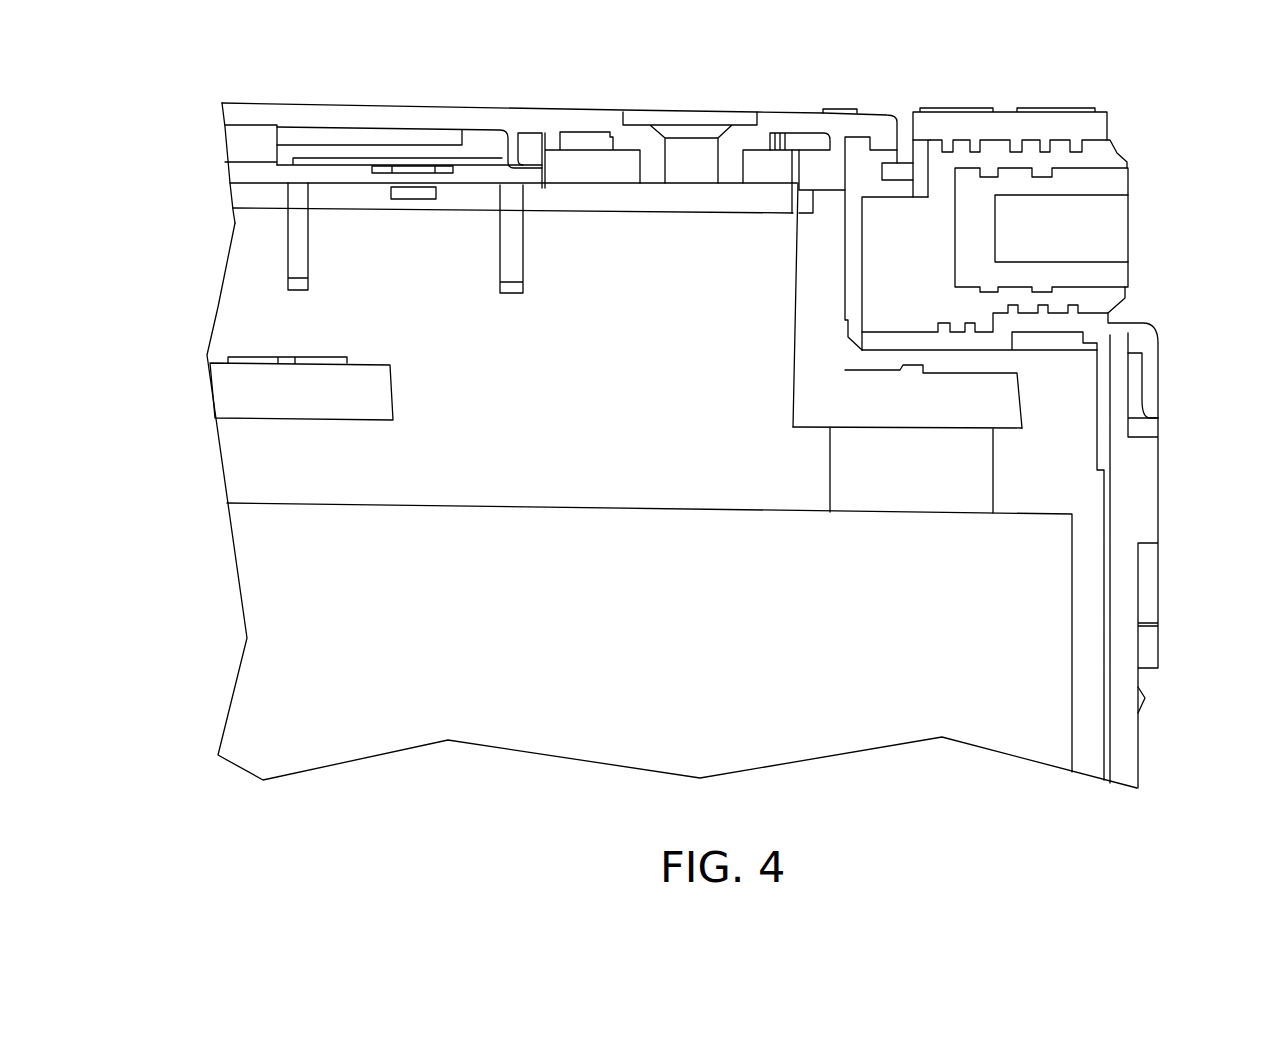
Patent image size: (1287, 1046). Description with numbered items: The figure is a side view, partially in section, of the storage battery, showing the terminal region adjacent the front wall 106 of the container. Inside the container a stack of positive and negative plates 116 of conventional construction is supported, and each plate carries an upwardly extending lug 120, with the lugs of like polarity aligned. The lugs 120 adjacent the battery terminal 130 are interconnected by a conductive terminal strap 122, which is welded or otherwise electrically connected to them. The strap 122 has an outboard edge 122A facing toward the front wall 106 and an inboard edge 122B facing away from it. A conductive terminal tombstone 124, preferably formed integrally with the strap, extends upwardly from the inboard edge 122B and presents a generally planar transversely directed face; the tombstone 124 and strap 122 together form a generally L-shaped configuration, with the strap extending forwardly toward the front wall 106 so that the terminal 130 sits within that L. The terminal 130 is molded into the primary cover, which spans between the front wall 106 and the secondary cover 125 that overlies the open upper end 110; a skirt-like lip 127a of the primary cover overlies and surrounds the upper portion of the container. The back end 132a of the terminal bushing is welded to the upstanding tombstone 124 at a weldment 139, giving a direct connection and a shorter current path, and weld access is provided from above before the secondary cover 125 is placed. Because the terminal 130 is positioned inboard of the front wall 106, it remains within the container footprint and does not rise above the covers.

The open upper end 110 is at (355, 185).
The secondary cover 125 is at (793, 127).
The conductive terminal tombstone 124 is at (820, 213).
The weldment 139 is at (853, 237).
The back end of the bushing 132a is at (863, 270).
The battery terminal 130 is at (1108, 157).
The conductive terminal strap 122 is at (985, 400).
The outboard edge 122A is at (1022, 413).
The inboard edge 122B is at (798, 380).
The skirt-like lip 127a is at (1150, 392).
The lug 120 is at (1160, 462).
The positive and negative plates 116 is at (1035, 600).
The front wall 106 is at (1120, 733).